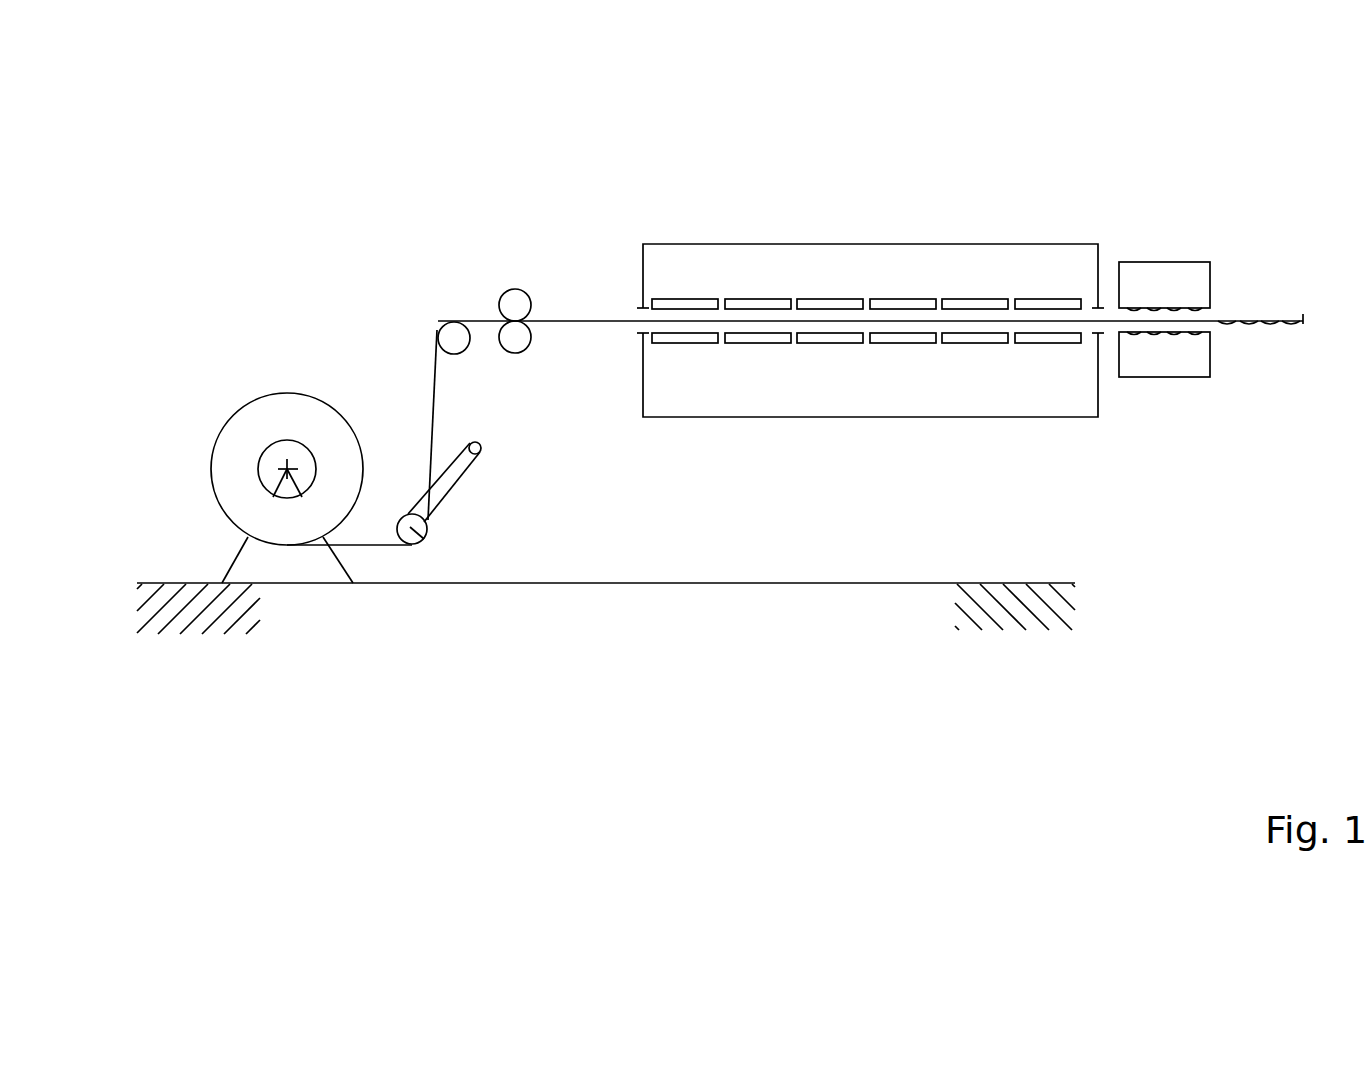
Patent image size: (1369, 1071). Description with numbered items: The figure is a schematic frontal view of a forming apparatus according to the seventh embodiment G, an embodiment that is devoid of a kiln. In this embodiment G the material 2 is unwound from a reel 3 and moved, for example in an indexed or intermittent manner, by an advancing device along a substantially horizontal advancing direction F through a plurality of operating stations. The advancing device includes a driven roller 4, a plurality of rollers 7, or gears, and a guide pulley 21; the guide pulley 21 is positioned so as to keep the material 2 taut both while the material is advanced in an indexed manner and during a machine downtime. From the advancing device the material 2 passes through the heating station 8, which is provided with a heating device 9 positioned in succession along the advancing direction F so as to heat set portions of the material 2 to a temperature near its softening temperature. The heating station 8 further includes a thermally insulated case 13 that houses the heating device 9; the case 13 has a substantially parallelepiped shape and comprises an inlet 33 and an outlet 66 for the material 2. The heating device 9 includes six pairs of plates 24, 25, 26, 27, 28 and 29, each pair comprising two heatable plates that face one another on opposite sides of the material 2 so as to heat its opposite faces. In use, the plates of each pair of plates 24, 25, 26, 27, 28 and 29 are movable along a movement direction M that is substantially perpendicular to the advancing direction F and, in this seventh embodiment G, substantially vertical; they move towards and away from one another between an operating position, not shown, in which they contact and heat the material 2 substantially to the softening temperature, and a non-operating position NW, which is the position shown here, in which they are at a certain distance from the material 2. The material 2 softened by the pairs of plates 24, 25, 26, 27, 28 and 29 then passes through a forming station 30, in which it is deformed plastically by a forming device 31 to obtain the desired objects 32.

The material 2 is at (437, 371).
The reel 3 is at (248, 431).
The driven roller 4 is at (515, 305).
The rollers 7 is at (458, 332).
The heating station 8 is at (850, 227).
The heating device 9 is at (825, 293).
The thermally insulated case 13 is at (998, 417).
The guide pulley 21 is at (425, 539).
The pair of plates 24 is at (678, 346).
The pair of plates 25 is at (751, 346).
The pair of plates 26 is at (823, 346).
The pair of plates 27 is at (896, 346).
The pair of plates 28 is at (968, 346).
The pair of plates 29 is at (1041, 346).
The forming station 30 is at (1200, 287).
The forming device 31 is at (1212, 280).
The objects 32 is at (1290, 323).
The inlet 33 is at (644, 329).
The outlet 66 is at (1097, 327).
The seventh embodiment G is at (393, 152).
The advancing direction F is at (780, 204).
The movement direction M is at (1075, 218).
The non-operating position NW is at (953, 287).